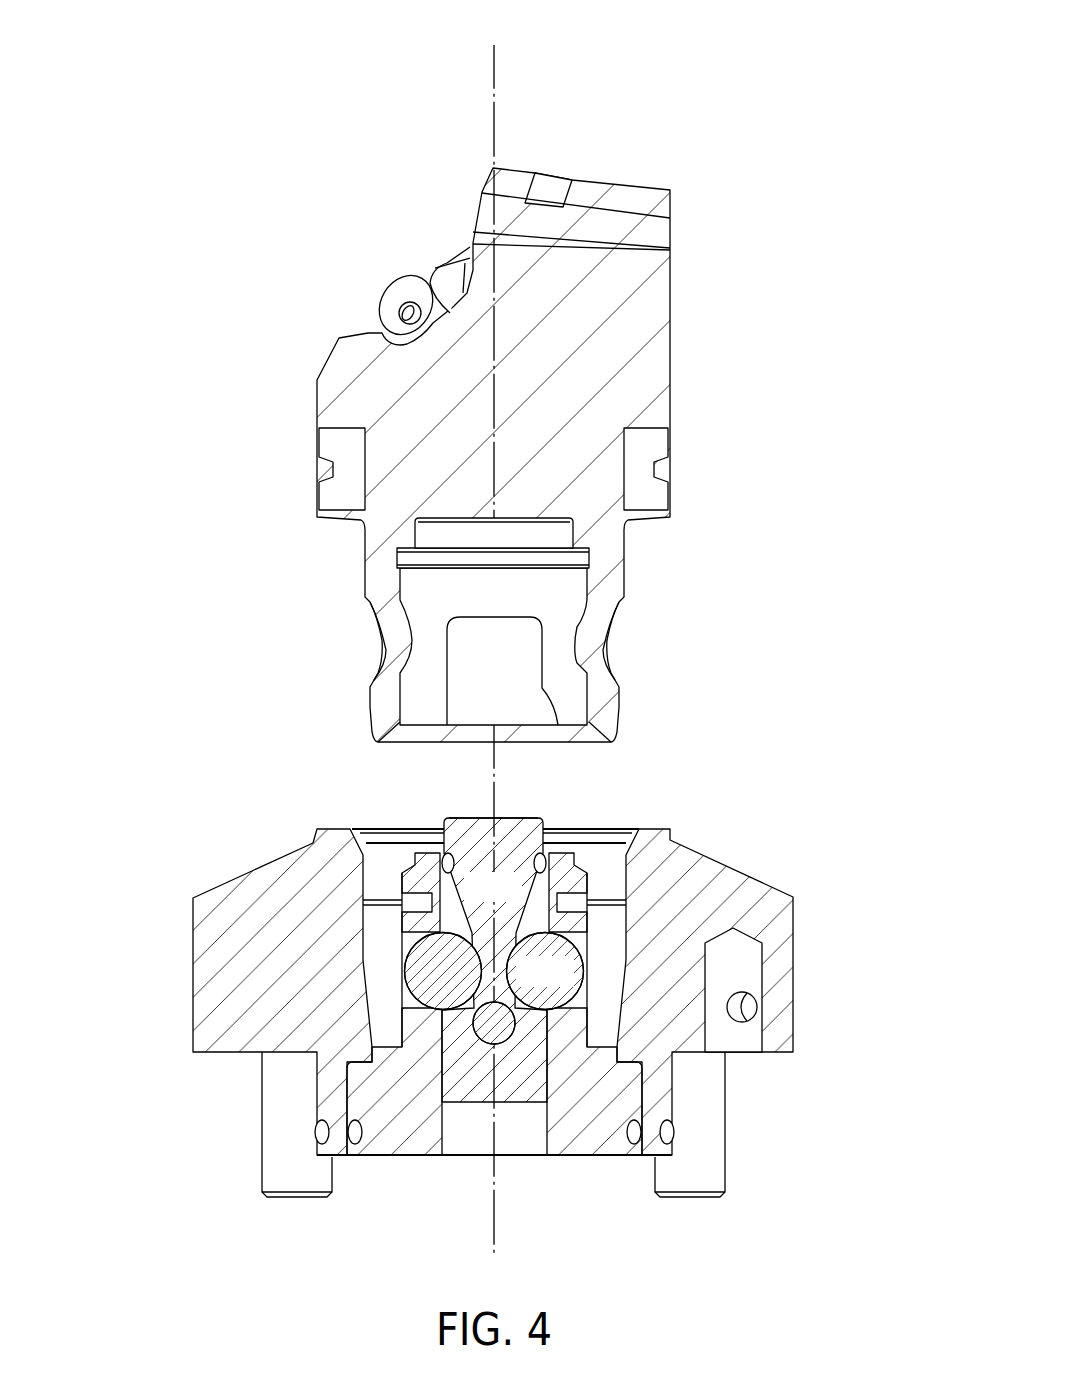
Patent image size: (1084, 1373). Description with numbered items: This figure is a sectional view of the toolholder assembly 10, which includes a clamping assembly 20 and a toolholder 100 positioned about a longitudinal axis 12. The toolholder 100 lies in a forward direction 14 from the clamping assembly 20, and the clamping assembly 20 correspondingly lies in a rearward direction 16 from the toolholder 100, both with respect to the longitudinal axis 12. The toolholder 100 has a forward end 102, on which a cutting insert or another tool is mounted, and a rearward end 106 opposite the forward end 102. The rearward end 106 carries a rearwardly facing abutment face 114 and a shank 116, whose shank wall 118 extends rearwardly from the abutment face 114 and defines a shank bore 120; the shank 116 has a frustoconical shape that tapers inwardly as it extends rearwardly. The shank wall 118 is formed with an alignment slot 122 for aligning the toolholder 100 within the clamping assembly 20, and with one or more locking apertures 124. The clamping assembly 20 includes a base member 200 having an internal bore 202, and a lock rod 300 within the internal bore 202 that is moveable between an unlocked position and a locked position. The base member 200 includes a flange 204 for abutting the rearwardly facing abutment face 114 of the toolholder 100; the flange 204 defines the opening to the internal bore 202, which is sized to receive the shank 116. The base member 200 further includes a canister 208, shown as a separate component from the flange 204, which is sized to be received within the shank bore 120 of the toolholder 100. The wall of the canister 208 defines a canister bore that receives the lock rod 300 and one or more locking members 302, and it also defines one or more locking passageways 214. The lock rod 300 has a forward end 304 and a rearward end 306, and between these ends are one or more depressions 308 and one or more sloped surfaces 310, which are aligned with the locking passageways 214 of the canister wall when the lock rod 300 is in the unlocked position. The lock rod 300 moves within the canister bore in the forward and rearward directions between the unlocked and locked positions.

The toolholder assembly 10 is at (150, 128).
The longitudinal axis 12 is at (503, 114).
The forward direction 14 is at (503, 50).
The rearward direction 16 is at (503, 1250).
The clamping assembly 20 is at (800, 812).
The toolholder 100 is at (742, 258).
The forward end 102 is at (322, 195).
The rearward end 106 is at (318, 663).
The rearwardly facing abutment face 114 is at (653, 528).
The shank 116 is at (293, 576).
The shank wall 118 is at (355, 552).
The shank bore 120 is at (515, 677).
The alignment slot 122 is at (467, 700).
The locking apertures 124 is at (620, 640).
The base member 200 is at (812, 906).
The internal bore 202 is at (620, 835).
The flange 204 is at (333, 827).
The canister 208 is at (570, 867).
The locking passageways 214 is at (572, 1018).
The lock rod 300 is at (518, 899).
The locking members 302 is at (570, 984).
The forward end 304 is at (517, 838).
The rearward end 306 is at (463, 1095).
The depressions 308 is at (468, 945).
The sloped surfaces 310 is at (538, 928).